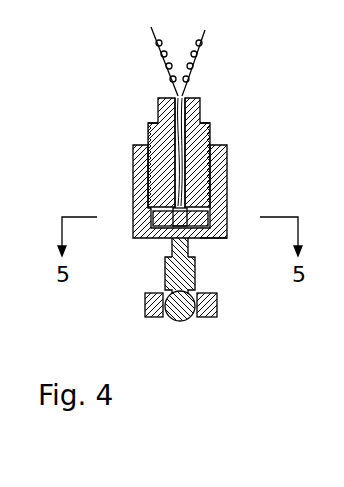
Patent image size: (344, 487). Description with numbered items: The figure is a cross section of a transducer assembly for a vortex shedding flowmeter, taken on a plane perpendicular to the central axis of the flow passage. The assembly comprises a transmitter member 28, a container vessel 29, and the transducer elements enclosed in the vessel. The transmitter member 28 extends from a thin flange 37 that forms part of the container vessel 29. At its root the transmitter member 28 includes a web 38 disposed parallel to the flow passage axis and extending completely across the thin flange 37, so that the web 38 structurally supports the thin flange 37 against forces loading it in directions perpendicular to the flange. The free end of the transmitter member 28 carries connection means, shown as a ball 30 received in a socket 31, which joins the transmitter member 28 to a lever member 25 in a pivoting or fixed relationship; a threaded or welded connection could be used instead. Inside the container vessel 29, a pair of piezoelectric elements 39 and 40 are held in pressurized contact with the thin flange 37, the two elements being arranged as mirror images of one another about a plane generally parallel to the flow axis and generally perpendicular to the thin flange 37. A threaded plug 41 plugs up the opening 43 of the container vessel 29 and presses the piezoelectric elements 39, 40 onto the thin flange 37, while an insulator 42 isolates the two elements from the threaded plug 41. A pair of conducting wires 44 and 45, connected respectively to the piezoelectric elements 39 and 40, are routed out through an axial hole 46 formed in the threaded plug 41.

The lever member 25 is at (218, 303).
The transmitter member 28 is at (165, 272).
The container vessel 29 is at (133, 188).
The ball 30 is at (186, 320).
The socket 31 is at (163, 318).
The thin flange 37 is at (203, 240).
The web 38 is at (172, 248).
The piezoelectric element 39 is at (133, 165).
The piezoelectric element 40 is at (227, 220).
The threaded plug 41 is at (157, 132).
The insulator 42 is at (222, 165).
The opening 43 is at (212, 130).
The conducting wire 44 is at (156, 50).
The conducting wire 45 is at (203, 51).
The axial hole 46 is at (177, 93).